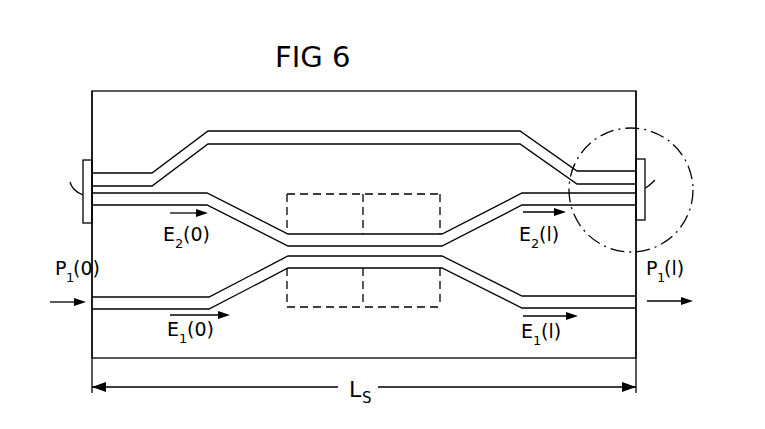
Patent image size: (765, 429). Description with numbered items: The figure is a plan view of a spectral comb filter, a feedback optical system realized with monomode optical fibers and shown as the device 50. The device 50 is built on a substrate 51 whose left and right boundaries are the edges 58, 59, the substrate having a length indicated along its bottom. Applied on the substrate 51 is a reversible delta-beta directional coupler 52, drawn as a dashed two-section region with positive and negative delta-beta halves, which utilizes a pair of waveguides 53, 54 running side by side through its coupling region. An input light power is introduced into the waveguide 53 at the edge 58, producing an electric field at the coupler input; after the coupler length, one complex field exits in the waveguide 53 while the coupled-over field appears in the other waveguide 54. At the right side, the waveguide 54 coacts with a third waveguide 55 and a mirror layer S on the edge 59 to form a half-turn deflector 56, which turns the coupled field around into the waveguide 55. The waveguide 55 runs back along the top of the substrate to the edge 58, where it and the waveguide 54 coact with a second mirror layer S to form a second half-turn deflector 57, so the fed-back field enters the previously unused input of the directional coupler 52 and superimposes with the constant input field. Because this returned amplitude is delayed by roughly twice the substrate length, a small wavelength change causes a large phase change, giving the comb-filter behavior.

The device 50 is at (575, 80).
The substrate 51 is at (627, 100).
The reversible Δβ directional coupler 52 is at (395, 314).
The waveguide 53 is at (250, 287).
The waveguide 54 is at (247, 222).
The third waveguide 55 is at (435, 131).
The 180°-deflector 56 is at (622, 161).
The second 180°-deflector 57 is at (74, 213).
The edge 58 is at (92, 128).
The edge 59 is at (636, 345).